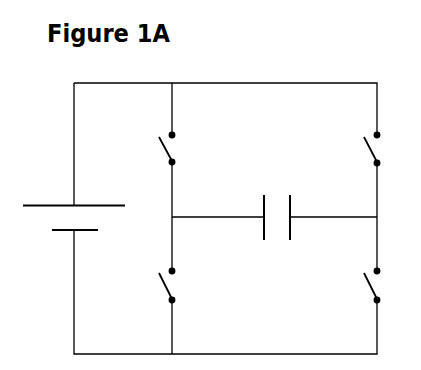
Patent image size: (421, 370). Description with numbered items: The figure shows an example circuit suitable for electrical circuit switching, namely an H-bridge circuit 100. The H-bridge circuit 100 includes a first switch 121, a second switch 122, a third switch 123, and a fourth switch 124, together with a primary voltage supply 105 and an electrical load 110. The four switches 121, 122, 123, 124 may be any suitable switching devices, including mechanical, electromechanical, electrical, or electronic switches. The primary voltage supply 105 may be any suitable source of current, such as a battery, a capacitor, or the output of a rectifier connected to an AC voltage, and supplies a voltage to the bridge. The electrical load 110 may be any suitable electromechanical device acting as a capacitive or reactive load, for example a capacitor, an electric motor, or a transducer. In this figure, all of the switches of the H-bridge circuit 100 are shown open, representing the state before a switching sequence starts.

The H-bridge circuit 100 is at (60, 126).
The primary voltage supply 105 is at (63, 233).
The electrical load 110 is at (263, 240).
The first switch (S1) 121 is at (167, 154).
The second switch (S2) 122 is at (167, 292).
The third switch (S3) 123 is at (370, 156).
The fourth switch (S4) 124 is at (371, 291).